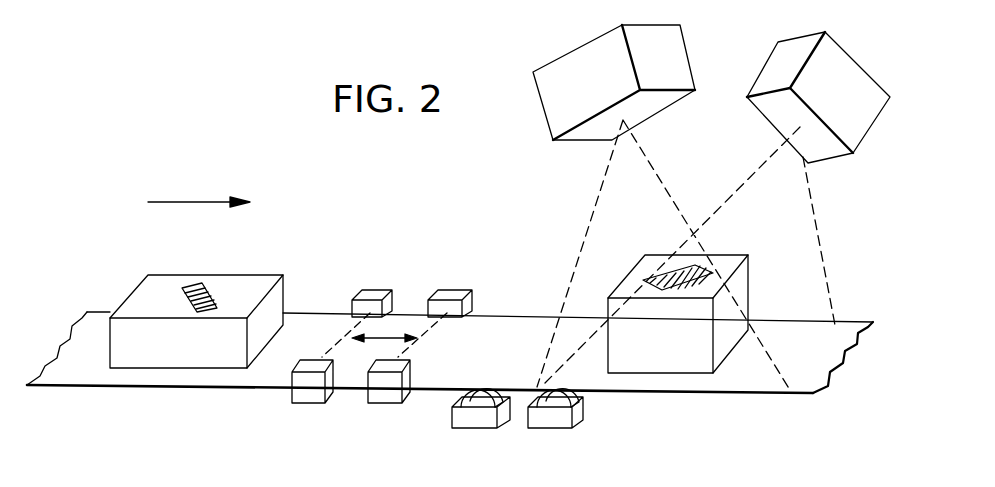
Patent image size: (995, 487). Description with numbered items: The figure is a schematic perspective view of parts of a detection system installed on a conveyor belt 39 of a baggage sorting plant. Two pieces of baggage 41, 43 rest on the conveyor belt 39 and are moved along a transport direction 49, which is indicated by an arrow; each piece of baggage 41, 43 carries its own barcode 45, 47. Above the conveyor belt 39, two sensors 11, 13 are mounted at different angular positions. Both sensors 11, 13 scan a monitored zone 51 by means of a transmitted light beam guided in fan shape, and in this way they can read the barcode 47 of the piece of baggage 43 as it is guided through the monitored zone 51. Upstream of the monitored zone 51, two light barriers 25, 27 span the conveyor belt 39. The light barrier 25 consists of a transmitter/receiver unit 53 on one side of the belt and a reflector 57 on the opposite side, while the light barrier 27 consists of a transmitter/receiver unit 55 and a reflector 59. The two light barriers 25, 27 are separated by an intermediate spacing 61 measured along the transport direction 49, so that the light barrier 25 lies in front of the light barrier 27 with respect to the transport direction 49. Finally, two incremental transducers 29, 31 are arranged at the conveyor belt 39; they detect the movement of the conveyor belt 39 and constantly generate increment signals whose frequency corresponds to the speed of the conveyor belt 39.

The sensor 11 is at (577, 60).
The sensor 13 is at (847, 77).
The light barrier 25 is at (290, 412).
The light barrier 27 is at (377, 408).
The incremental transducer 29 is at (482, 417).
The incremental transducer 31 is at (557, 418).
The conveyor belt 39 is at (80, 372).
The piece of baggage 41 is at (177, 353).
The piece of baggage 43 is at (672, 353).
The barcode 45 is at (213, 292).
The barcode 47 is at (690, 265).
The transport direction 49 is at (172, 200).
The monitored zone 51 is at (620, 200).
The transmitter/receiver unit 53 is at (307, 393).
The transmitter/receiver unit 55 is at (392, 393).
The reflector 57 is at (370, 292).
The reflector 59 is at (457, 292).
The intermediate spacing 61 is at (405, 318).